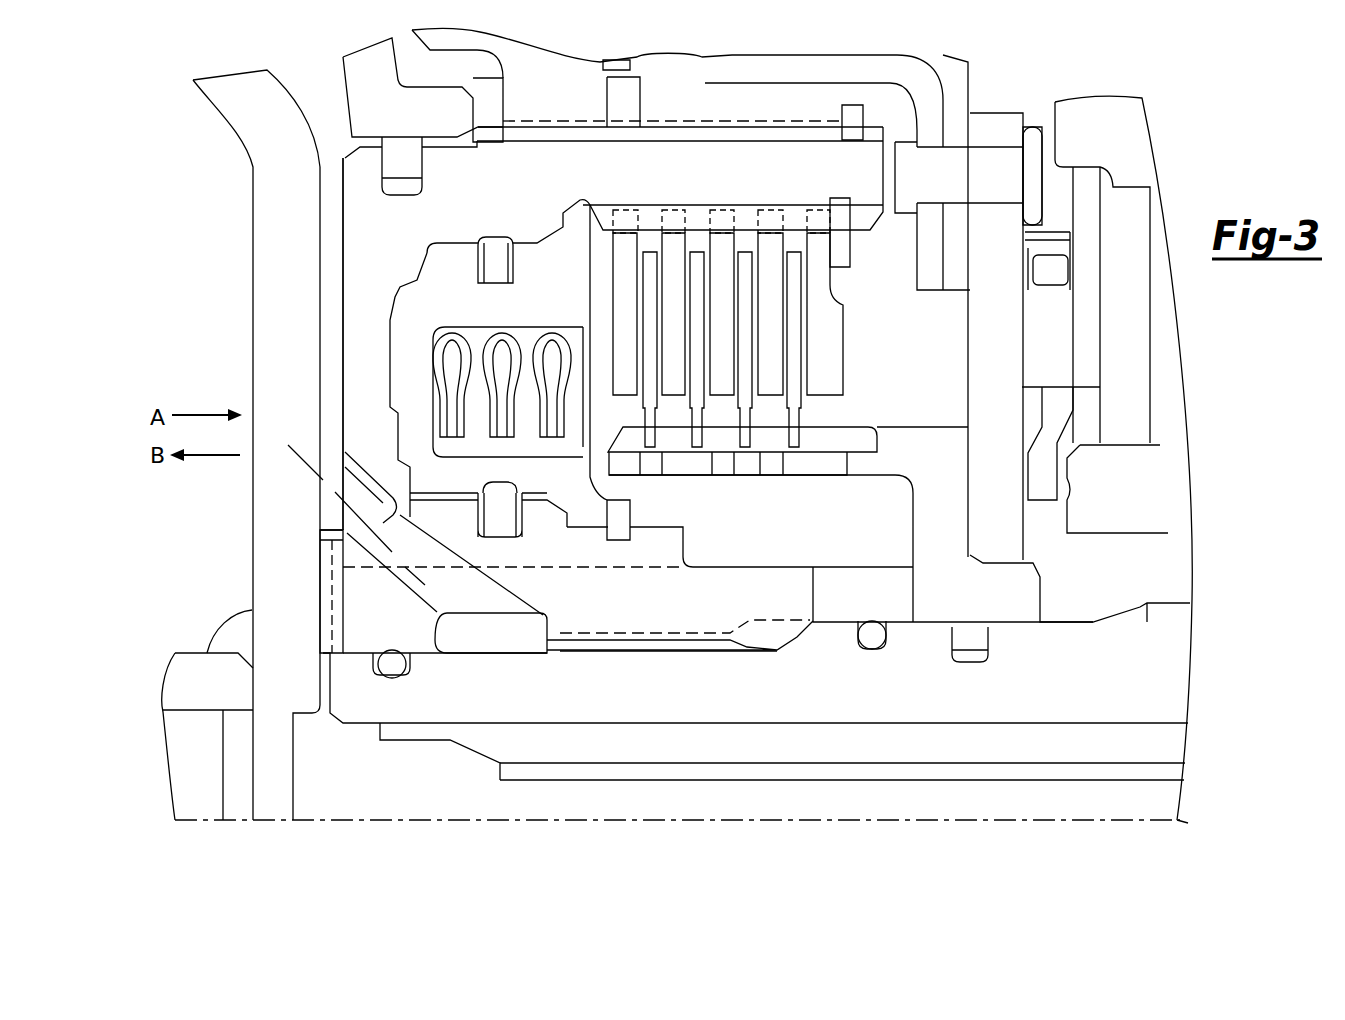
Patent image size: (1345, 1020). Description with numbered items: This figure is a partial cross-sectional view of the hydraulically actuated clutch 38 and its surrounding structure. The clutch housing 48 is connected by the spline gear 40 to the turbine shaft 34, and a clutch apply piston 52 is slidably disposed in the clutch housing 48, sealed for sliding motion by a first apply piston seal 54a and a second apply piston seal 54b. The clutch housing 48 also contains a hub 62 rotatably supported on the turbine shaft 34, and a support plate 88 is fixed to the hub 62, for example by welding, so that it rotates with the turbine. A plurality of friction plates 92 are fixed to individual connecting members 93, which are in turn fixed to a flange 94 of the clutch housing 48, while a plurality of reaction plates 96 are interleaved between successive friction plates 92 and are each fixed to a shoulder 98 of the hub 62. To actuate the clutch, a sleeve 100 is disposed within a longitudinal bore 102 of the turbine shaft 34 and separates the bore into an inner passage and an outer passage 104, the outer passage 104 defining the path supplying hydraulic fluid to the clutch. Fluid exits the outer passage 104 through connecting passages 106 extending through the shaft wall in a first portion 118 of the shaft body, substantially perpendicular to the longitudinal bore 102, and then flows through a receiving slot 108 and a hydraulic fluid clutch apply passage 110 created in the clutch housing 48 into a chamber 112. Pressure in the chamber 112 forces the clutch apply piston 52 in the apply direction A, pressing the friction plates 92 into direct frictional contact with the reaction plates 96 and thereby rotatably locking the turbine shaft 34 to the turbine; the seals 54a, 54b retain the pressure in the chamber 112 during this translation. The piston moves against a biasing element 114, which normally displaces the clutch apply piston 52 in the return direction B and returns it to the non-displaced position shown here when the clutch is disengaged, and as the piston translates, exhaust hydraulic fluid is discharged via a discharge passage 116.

The turbine shaft 34 is at (553, 705).
The hydraulically actuated clutch 38 is at (771, 348).
The spline gear 40 is at (640, 643).
The clutch housing 48 is at (360, 330).
The clutch apply piston 52 is at (537, 273).
The first apply piston seal 54a is at (498, 253).
The second apply piston seal 54b is at (507, 515).
The hub 62 is at (1023, 590).
The support plate 88 is at (990, 530).
The friction plates 92 is at (770, 253).
The connecting members 93 is at (793, 213).
The flange 94 is at (670, 167).
The reaction plates 96 is at (728, 391).
The shoulder 98 is at (843, 440).
The sleeve 100 is at (820, 773).
The longitudinal bore 102 is at (917, 813).
The outer passage 104 is at (1018, 750).
The connecting passages 106 is at (470, 707).
The receiving slot 108 is at (443, 623).
The hydraulic fluid clutch apply passage 110 is at (417, 517).
The chamber 112 is at (417, 280).
The biasing element 114 is at (560, 440).
The discharge passage 116 is at (327, 578).
The first portion 118 is at (1157, 820).